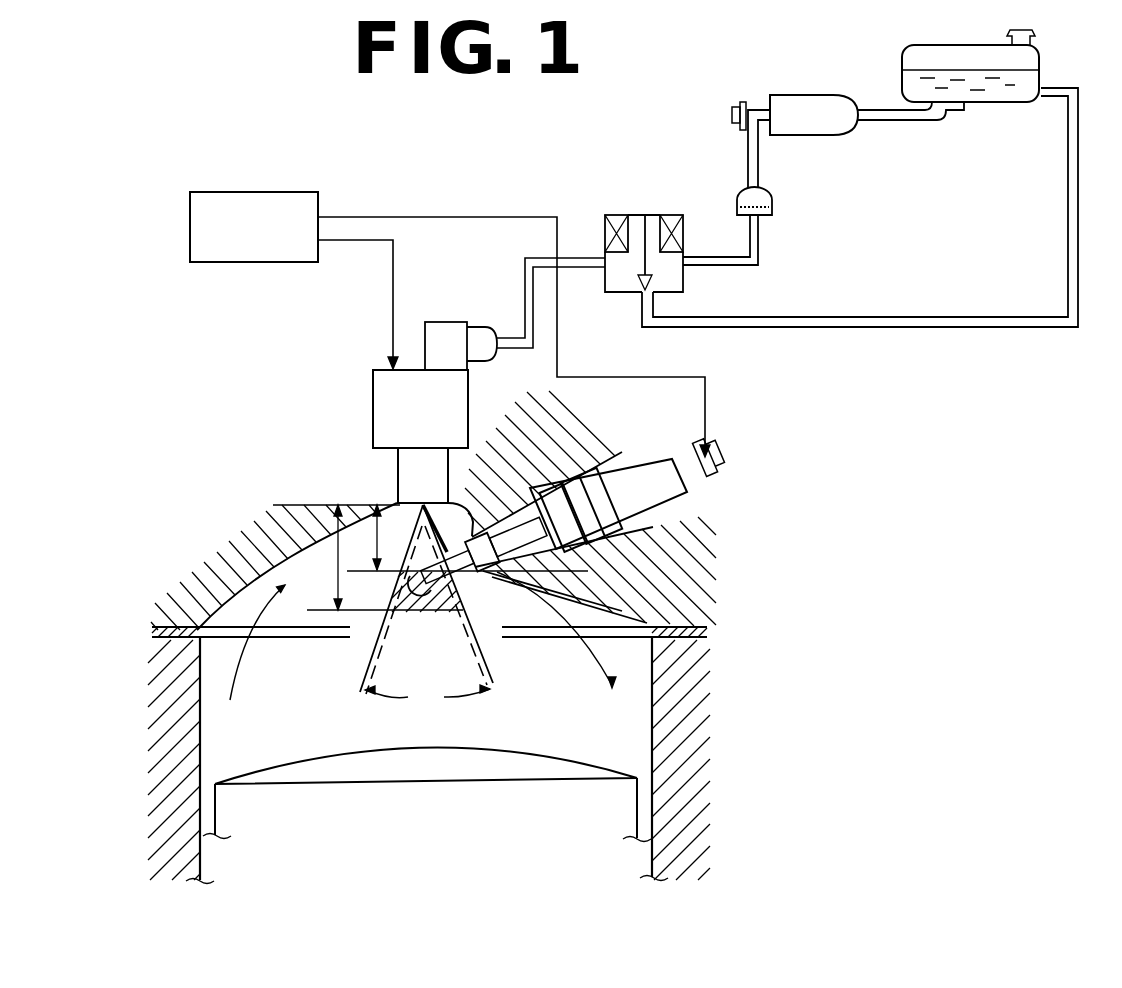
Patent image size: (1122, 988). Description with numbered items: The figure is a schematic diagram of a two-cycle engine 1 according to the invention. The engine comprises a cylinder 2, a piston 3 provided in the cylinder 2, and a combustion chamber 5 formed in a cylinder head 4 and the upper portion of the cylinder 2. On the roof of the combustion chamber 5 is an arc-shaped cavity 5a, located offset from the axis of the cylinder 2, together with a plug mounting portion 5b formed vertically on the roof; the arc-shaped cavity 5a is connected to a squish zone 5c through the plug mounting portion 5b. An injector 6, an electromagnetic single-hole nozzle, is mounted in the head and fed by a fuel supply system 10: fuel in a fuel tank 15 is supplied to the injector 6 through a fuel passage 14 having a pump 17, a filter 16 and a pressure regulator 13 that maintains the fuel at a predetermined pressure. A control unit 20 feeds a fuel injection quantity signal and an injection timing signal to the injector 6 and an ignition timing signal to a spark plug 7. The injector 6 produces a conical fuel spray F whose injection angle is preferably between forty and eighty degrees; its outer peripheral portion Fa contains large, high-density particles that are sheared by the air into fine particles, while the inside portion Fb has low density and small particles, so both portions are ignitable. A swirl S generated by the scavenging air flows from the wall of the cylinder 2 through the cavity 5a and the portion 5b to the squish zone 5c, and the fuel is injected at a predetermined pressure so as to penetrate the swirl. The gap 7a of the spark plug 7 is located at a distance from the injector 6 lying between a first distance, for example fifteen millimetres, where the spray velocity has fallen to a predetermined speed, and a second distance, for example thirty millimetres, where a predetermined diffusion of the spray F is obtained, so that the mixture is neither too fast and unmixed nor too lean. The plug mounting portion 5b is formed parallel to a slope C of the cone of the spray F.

The two-cycle engine 1 is at (714, 688).
The cylinder 2 is at (680, 712).
The piston 3 is at (627, 812).
The cylinder head 4 is at (230, 550).
The combustion chamber 5 is at (232, 556).
The arc-shaped cavity 5a is at (316, 556).
The plug mounting portion 5b is at (488, 578).
The squish zone 5c is at (620, 611).
The injector 6 is at (373, 410).
The spark plug 7 is at (676, 482).
The gap 7a is at (455, 598).
The fuel supply system 10 is at (942, 338).
The pressure regulator 13 is at (676, 215).
The fuel passage 14 is at (766, 242).
The fuel tank 15 is at (1032, 102).
The filter 16 is at (772, 196).
The pump 17 is at (845, 95).
The control unit 20 is at (303, 192).
The swirl S is at (419, 653).
The fuel spray F is at (348, 660).
The outer peripheral portion Fa is at (360, 676).
The inside portion Fb is at (495, 676).
The slope C is at (494, 648).